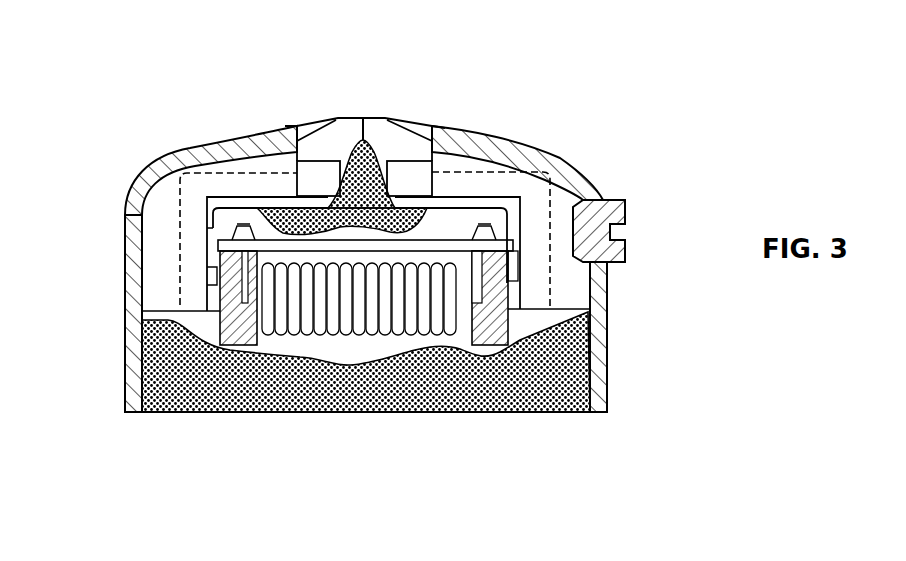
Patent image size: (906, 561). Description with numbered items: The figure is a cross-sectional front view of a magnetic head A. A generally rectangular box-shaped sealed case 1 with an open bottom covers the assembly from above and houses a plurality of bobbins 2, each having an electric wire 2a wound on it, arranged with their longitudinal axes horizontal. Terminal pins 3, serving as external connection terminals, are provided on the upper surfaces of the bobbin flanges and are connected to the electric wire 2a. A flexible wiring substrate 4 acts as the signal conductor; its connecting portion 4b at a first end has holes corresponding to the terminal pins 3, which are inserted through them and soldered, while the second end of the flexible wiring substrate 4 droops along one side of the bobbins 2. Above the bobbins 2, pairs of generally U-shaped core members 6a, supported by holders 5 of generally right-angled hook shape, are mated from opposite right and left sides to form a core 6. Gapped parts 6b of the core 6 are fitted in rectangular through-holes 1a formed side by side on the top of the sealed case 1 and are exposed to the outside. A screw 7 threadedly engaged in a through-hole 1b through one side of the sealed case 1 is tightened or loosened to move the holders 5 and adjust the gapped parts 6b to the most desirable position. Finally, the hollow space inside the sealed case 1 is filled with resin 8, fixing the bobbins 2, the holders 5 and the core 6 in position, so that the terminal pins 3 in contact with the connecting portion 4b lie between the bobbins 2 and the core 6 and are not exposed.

The magnetic head A is at (204, 132).
The sealed case 1 is at (570, 150).
The rectangular through-hole 1a is at (270, 127).
The through-hole 1b is at (604, 200).
The bobbin 2 is at (135, 283).
The electric wire 2a is at (364, 318).
The terminal pin 3 is at (163, 218).
The flexible wiring substrate 4 is at (483, 224).
The connecting portion 4b is at (217, 243).
The holder 5 is at (143, 167).
The core 6 is at (374, 117).
The core member 6a is at (343, 117).
The gapped part 6b is at (363, 117).
The screw 7 is at (627, 213).
The resin 8 is at (230, 383).